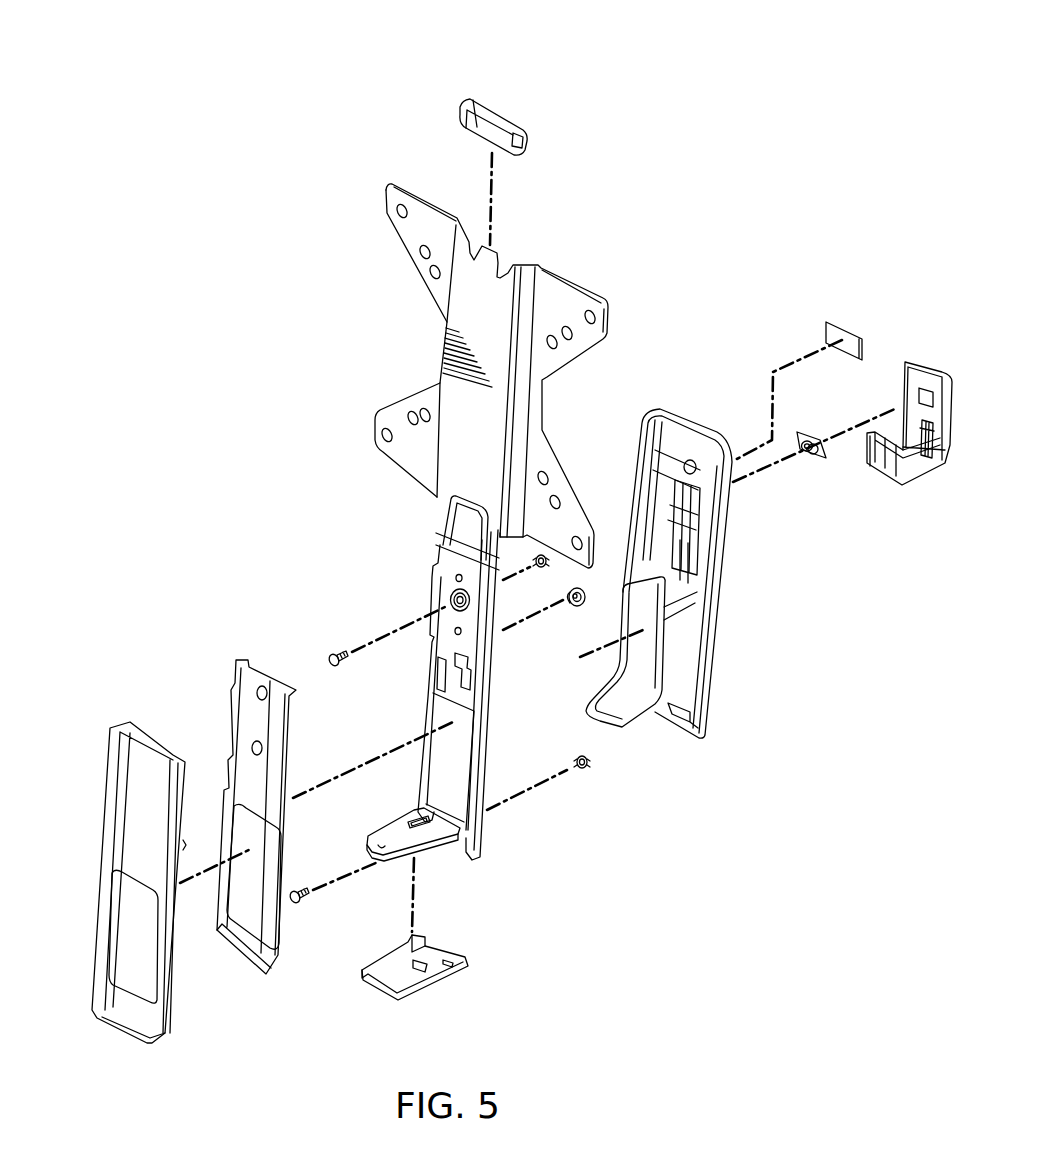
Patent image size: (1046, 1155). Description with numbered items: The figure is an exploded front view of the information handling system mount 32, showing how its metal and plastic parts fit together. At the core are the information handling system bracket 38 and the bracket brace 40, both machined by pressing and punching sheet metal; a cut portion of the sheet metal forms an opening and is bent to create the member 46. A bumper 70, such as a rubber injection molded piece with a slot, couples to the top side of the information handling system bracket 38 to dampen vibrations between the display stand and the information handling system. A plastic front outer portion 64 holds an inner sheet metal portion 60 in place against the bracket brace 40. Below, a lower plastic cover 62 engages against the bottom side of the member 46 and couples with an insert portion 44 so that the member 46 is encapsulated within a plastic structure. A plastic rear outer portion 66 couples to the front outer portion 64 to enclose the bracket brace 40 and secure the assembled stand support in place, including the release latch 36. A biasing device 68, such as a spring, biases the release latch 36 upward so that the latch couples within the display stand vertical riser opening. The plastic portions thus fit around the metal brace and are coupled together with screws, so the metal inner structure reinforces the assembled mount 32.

The information handling system mount 32 is at (290, 70).
The release latch 36 is at (932, 362).
The information handling system bracket 38 is at (571, 283).
The bracket brace 40 is at (430, 590).
The insert portion 44 is at (622, 617).
The member 46 is at (410, 864).
The inner sheet metal portion 60 is at (233, 705).
The lower plastic cover 62 is at (434, 984).
The front outer portion 64 is at (105, 815).
The rear outer portion 66 is at (713, 660).
The biasing device 68 is at (921, 460).
The bumper 70 is at (498, 110).